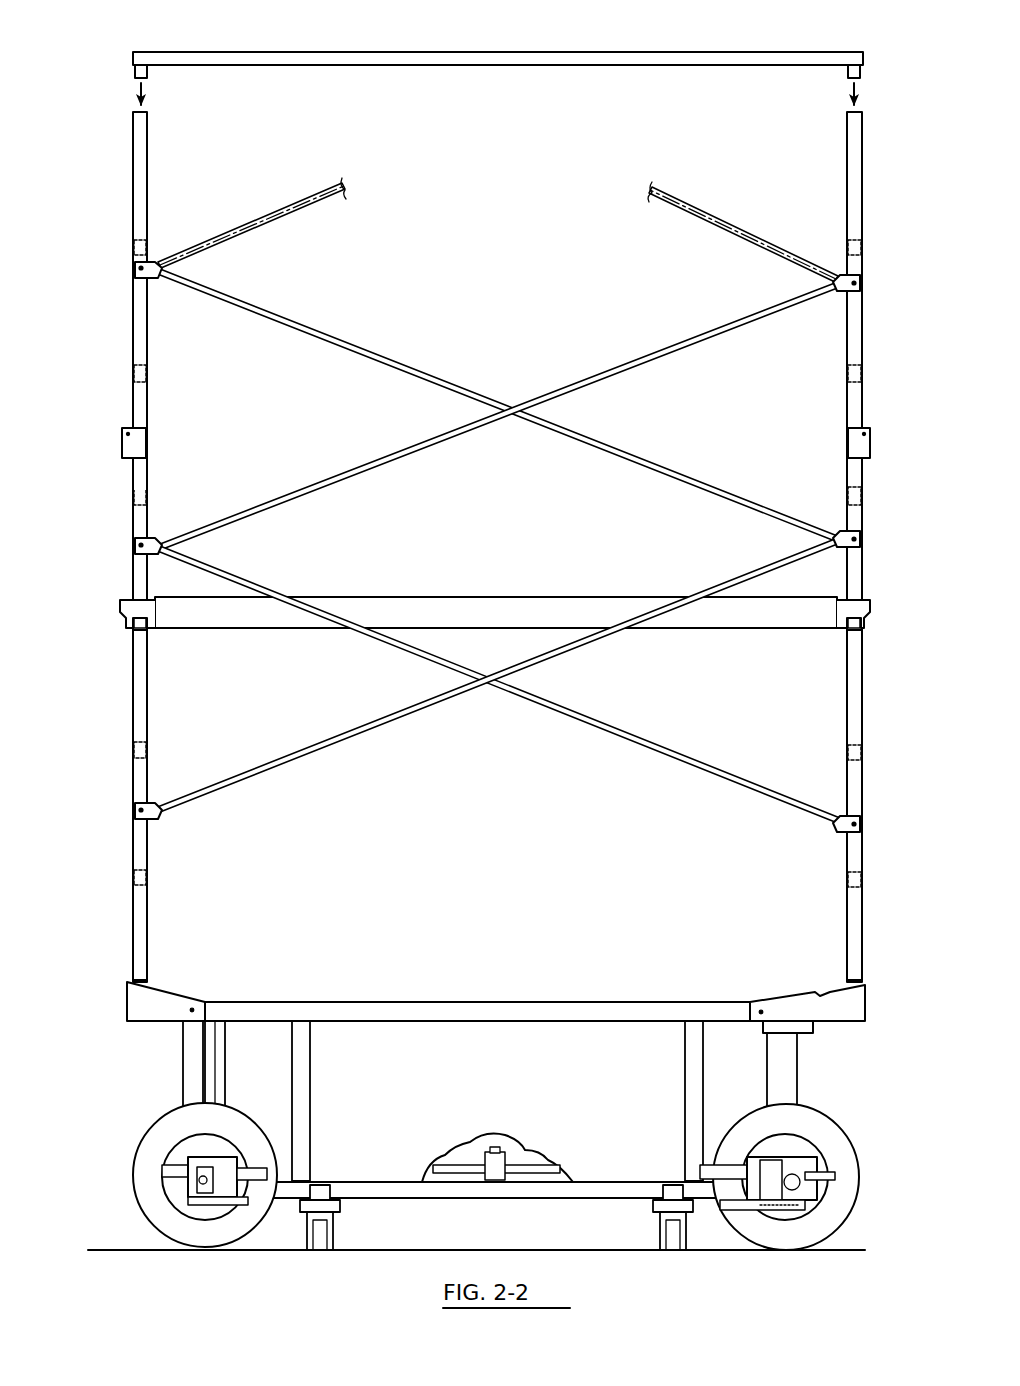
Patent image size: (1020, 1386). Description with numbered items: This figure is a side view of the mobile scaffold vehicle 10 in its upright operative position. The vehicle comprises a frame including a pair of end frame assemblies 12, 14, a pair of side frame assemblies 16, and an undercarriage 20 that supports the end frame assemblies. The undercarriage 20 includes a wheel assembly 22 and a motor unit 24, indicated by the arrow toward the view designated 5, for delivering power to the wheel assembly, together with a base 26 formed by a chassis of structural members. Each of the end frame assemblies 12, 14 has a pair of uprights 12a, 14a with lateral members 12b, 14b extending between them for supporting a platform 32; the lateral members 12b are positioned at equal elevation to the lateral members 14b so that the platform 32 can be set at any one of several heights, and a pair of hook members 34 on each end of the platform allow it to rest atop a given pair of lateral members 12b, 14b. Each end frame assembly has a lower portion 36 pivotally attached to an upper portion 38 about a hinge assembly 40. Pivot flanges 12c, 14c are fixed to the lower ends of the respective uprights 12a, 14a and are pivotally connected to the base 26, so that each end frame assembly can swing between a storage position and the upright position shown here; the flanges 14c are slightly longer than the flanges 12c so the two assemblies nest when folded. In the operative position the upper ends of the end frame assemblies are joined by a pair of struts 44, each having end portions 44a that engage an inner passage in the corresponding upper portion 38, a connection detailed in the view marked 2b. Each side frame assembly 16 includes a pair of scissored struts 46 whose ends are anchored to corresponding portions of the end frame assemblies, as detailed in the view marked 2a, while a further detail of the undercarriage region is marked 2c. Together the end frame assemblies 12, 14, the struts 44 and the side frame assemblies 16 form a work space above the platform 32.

The mobile scaffold vehicle 10 is at (95, 325).
The end frame assembly 12 is at (135, 192).
The upright 12a is at (135, 693).
The lateral member 12b is at (135, 492).
The pivot flange 12c is at (180, 1000).
The end frame assembly 14 is at (860, 195).
The upright 14a is at (862, 705).
The lateral member 14b is at (862, 377).
The pivot flange 14c is at (785, 1003).
The side frame assembly 16 is at (497, 545).
The undercarriage 20 is at (169, 1134).
The wheel assembly 22 is at (122, 1165).
The motor unit 24 is at (808, 1135).
The base 26 is at (458, 1003).
The platform 32 is at (500, 597).
The hook member 34 is at (120, 605).
The lower portion 36 is at (157, 468).
The upper portion 38 is at (152, 375).
The hinge assembly 40 is at (108, 433).
The strut 44 is at (430, 52).
The end portion 44a is at (135, 70).
The scissored strut 46 is at (625, 450).
The FIG. 2a detail view indicator 2a is at (205, 43).
The FIG. 2b detail view indicator 2b is at (822, 795).
The FIG. 2c detail view indicator 2c is at (305, 1185).
The FIG. 5 view indicator 5 is at (832, 1085).